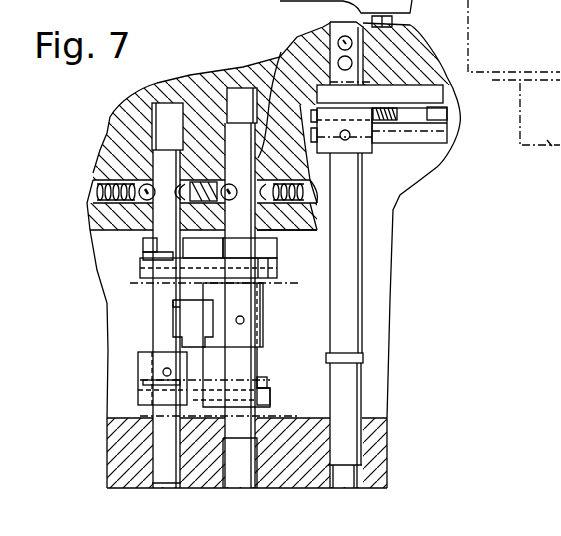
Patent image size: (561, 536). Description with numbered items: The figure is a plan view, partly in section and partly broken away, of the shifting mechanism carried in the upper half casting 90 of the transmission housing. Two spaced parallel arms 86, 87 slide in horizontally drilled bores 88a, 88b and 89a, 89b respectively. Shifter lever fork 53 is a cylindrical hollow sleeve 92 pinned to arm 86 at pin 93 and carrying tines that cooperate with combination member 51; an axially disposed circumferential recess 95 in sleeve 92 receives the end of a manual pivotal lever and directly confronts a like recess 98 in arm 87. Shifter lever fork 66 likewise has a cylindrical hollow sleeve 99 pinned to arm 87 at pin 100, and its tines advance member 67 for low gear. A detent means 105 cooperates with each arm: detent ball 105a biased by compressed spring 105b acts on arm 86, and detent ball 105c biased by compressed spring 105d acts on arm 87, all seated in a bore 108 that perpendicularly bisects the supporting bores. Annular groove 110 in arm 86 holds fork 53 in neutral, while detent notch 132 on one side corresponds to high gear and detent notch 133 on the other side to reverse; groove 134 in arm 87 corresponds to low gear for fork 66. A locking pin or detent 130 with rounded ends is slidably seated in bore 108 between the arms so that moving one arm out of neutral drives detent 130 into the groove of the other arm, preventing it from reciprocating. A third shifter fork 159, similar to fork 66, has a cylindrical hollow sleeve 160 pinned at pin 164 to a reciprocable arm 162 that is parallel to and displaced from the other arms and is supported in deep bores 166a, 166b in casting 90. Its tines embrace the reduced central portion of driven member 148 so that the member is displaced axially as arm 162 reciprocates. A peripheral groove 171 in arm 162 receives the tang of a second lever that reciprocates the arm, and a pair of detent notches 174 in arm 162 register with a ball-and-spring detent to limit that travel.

The upper half casting 90 is at (109, 125).
The detent notch 133 is at (281, 52).
The bore 89a is at (170, 112).
The arm 87 is at (153, 339).
The bore 89b is at (166, 476).
The bore 88a is at (239, 100).
The bore 88b is at (245, 476).
The bore 166a is at (352, 43).
The detent notches 174 is at (352, 62).
The reciprocable arm 162 is at (360, 297).
The peripheral groove 171 is at (362, 360).
The bore 166b is at (355, 476).
The cylindrical hollow sleeve 160 is at (372, 130).
The driven member 148 is at (448, 132).
The shifter fork 159 is at (448, 113).
The pin 164 is at (349, 139).
The detent means 105 is at (82, 211).
The detent ball 105a is at (278, 230).
The compressed spring 105b is at (303, 191).
The detent ball 105c is at (97, 176).
The compressed spring 105d is at (95, 187).
The bore 108 is at (210, 167).
The annular groove 110 is at (219, 181).
The groove 134 is at (147, 238).
The locking pin or detent 130 is at (203, 249).
The detent notch 132 is at (250, 249).
The combination member 51 is at (281, 257).
The shifter lever fork 53 is at (283, 275).
The cylindrical hollow sleeve 92 is at (266, 305).
The pin 93 is at (244, 320).
The circumferential recess 95 is at (213, 320).
The recess 98 is at (173, 312).
The cylindrical hollow sleeve 99 is at (138, 363).
The pin 100 is at (163, 373).
The arm 86 is at (264, 355).
The member 67 is at (262, 384).
The shifter lever fork 66 is at (272, 396).